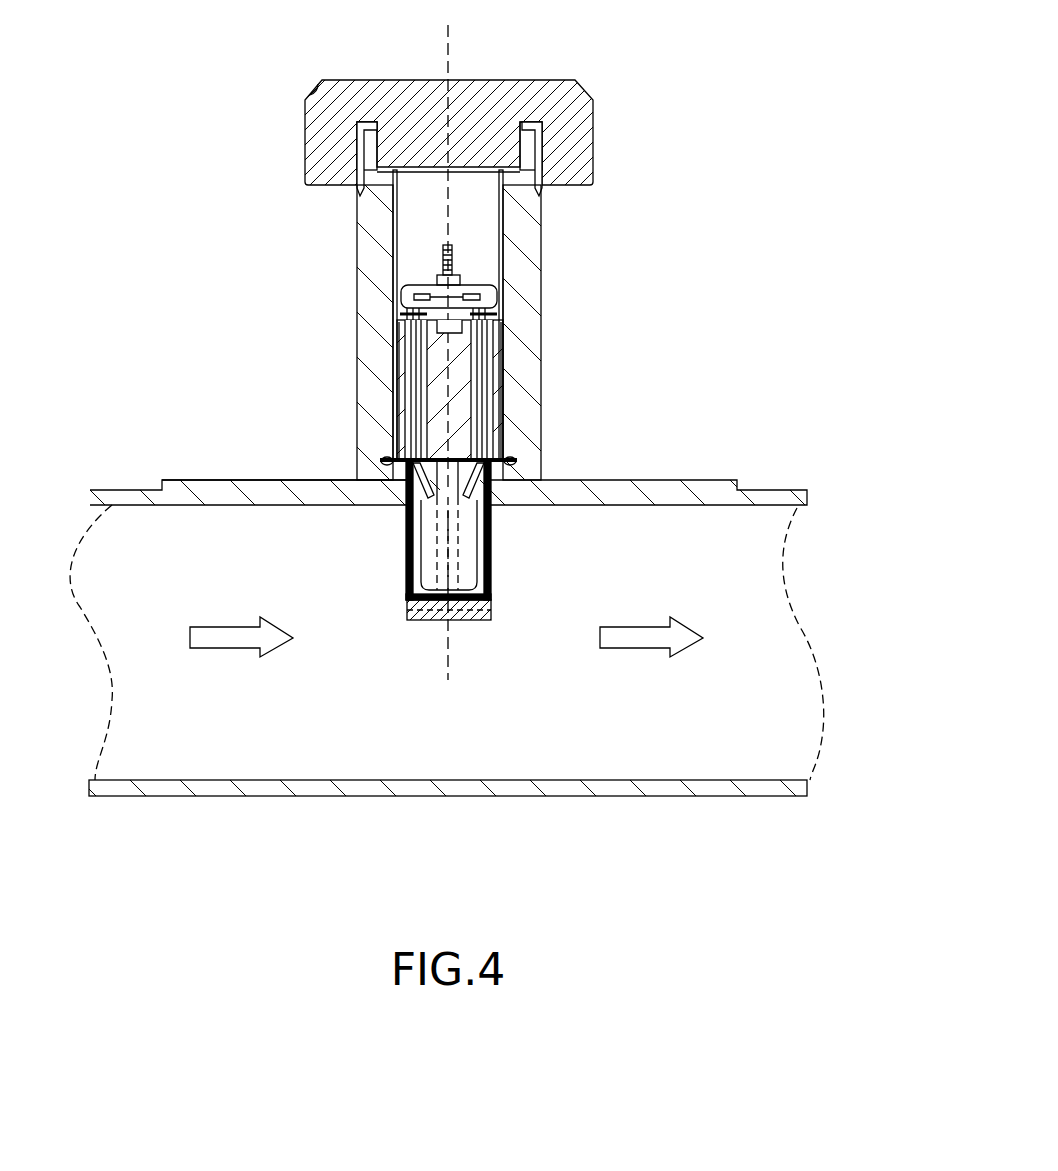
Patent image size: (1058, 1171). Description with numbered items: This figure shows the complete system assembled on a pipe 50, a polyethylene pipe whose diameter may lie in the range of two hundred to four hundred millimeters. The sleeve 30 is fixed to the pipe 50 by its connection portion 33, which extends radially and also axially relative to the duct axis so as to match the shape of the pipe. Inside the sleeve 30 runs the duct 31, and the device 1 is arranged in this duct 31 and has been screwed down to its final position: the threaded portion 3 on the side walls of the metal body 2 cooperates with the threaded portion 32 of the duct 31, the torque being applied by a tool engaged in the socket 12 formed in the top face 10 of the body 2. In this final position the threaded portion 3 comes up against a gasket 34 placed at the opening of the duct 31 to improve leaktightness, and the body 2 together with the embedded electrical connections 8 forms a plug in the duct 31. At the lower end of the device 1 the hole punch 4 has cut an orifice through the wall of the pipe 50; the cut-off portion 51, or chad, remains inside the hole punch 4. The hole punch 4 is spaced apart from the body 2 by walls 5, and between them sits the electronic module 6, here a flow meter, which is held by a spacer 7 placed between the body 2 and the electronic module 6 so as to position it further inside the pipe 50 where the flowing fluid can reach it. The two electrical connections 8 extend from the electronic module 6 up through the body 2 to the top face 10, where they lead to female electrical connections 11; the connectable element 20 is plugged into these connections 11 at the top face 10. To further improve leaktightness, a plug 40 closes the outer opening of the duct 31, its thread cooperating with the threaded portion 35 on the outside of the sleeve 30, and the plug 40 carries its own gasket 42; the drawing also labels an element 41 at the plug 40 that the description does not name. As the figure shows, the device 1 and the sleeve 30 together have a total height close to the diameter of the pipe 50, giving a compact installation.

The device 1 is at (430, 250).
The metal body 2 is at (466, 380).
The threaded portion 3 is at (504, 405).
The hole punch 4 is at (412, 621).
The walls 5 is at (491, 562).
The electronic module 6 is at (440, 560).
The spacer 7 is at (460, 505).
The electrical connections 8 is at (399, 410).
The top face 10 is at (460, 280).
The female electrical connections 11 is at (405, 332).
The socket 12 is at (411, 372).
The connectable element 20 is at (405, 290).
The sleeve 30 is at (541, 226).
The duct 31 is at (471, 205).
The threaded portion 32 is at (503, 300).
The connection portion 33 is at (255, 480).
The gasket 34 is at (400, 314).
The threaded portion 35 is at (353, 124).
The plug 40 is at (540, 80).
The snap clip 41 is at (356, 162).
The gasket 42 is at (367, 120).
The pipe 50 is at (108, 489).
The cut-off portion 51 is at (486, 621).